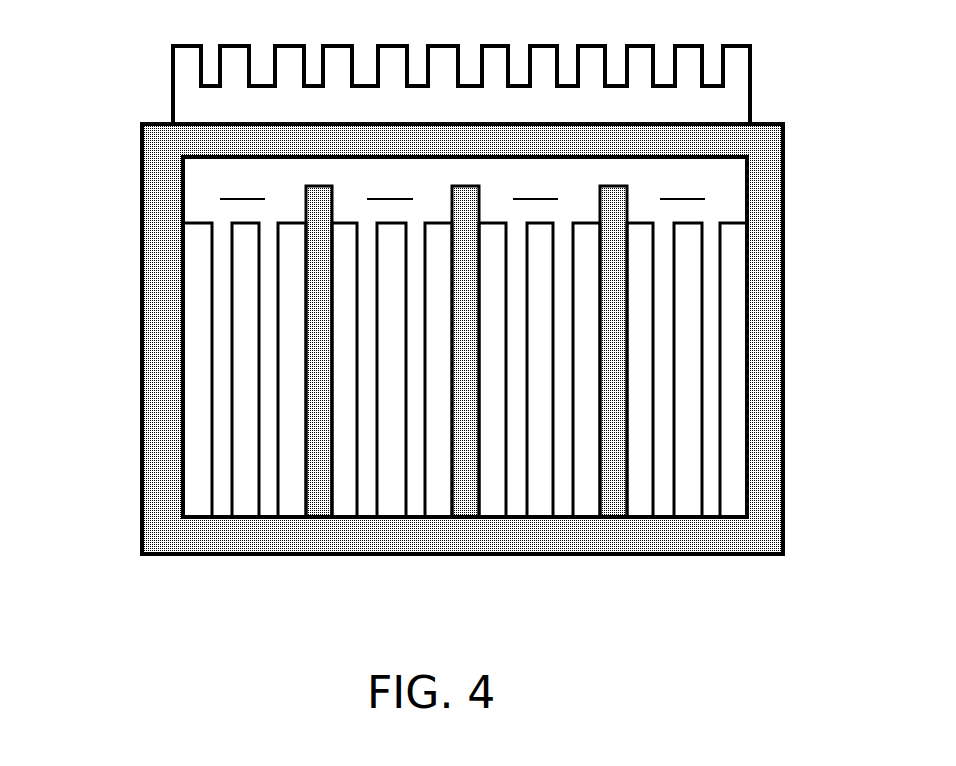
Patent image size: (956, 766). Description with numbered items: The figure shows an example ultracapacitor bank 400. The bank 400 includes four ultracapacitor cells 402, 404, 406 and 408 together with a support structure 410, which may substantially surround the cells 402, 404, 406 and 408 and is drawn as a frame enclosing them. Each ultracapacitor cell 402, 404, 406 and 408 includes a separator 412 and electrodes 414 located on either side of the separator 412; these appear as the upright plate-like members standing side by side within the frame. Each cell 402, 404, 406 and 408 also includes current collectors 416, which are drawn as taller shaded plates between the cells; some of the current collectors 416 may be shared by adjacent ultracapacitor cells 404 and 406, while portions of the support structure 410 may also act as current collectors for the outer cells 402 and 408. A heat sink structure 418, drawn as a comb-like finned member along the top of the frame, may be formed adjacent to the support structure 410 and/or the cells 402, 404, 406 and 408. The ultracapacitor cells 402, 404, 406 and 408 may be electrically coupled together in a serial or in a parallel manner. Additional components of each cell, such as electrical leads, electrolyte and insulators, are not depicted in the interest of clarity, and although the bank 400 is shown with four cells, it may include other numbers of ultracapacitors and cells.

The ultracapacitor bank 400 is at (437, 342).
The ultracapacitor cell 402 is at (288, 344).
The ultracapacitor cell 404 is at (436, 344).
The ultracapacitor cell 406 is at (583, 344).
The ultracapacitor cell 408 is at (703, 344).
The support structure 410 is at (133, 316).
The separator 412 is at (243, 342).
The electrodes 414 is at (287, 434).
The current collectors 416 is at (338, 493).
The heat sink structure 418 is at (764, 56).